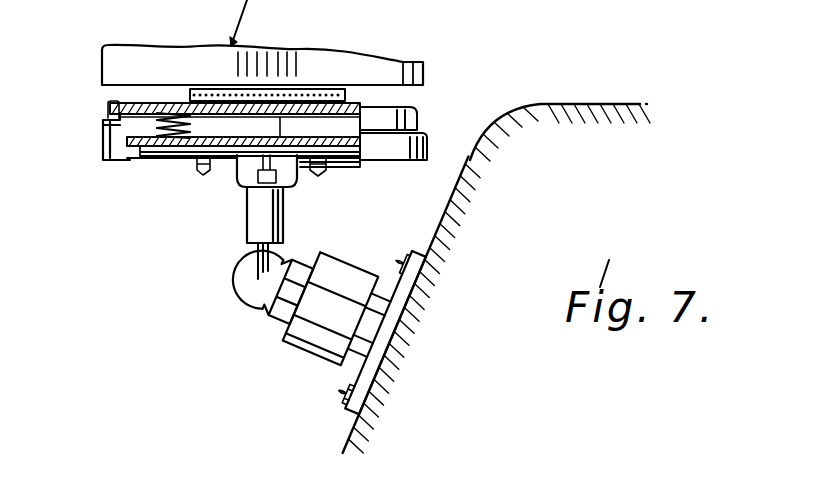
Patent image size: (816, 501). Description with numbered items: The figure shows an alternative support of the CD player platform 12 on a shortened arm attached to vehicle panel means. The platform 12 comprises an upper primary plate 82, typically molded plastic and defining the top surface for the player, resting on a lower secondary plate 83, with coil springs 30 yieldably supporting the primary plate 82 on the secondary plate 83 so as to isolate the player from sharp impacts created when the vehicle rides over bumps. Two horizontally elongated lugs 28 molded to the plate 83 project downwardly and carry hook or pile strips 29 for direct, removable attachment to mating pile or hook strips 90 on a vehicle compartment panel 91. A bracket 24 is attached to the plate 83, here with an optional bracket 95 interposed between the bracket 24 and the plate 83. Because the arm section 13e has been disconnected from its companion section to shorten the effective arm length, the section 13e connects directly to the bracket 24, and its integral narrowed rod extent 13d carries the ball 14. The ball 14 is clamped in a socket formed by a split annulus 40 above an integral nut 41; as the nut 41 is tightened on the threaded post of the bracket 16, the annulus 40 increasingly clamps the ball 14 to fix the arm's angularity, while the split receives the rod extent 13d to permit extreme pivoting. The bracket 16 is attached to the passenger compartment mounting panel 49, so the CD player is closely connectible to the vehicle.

The platform 12 is at (97, 152).
The narrowed rod extent 13d is at (258, 253).
The arm section 13e is at (247, 218).
The ball 14 is at (255, 281).
The bracket 16 is at (407, 343).
The bracket 24 is at (293, 184).
The lugs 28 is at (540, 0).
The hook or pile strips 29 is at (607, 0).
The coil springs 30 is at (110, 118).
The split annulus 40 is at (262, 320).
The nut 41 is at (293, 360).
The passenger compartment mounting panel 49 is at (454, 205).
The upper primary plate 82 is at (137, 103).
The lower secondary plate 83 is at (293, 122).
The pile or hook strips 90 is at (650, 0).
The vehicle compartment panel 91 is at (777, 0).
The optional bracket 95 is at (143, 160).